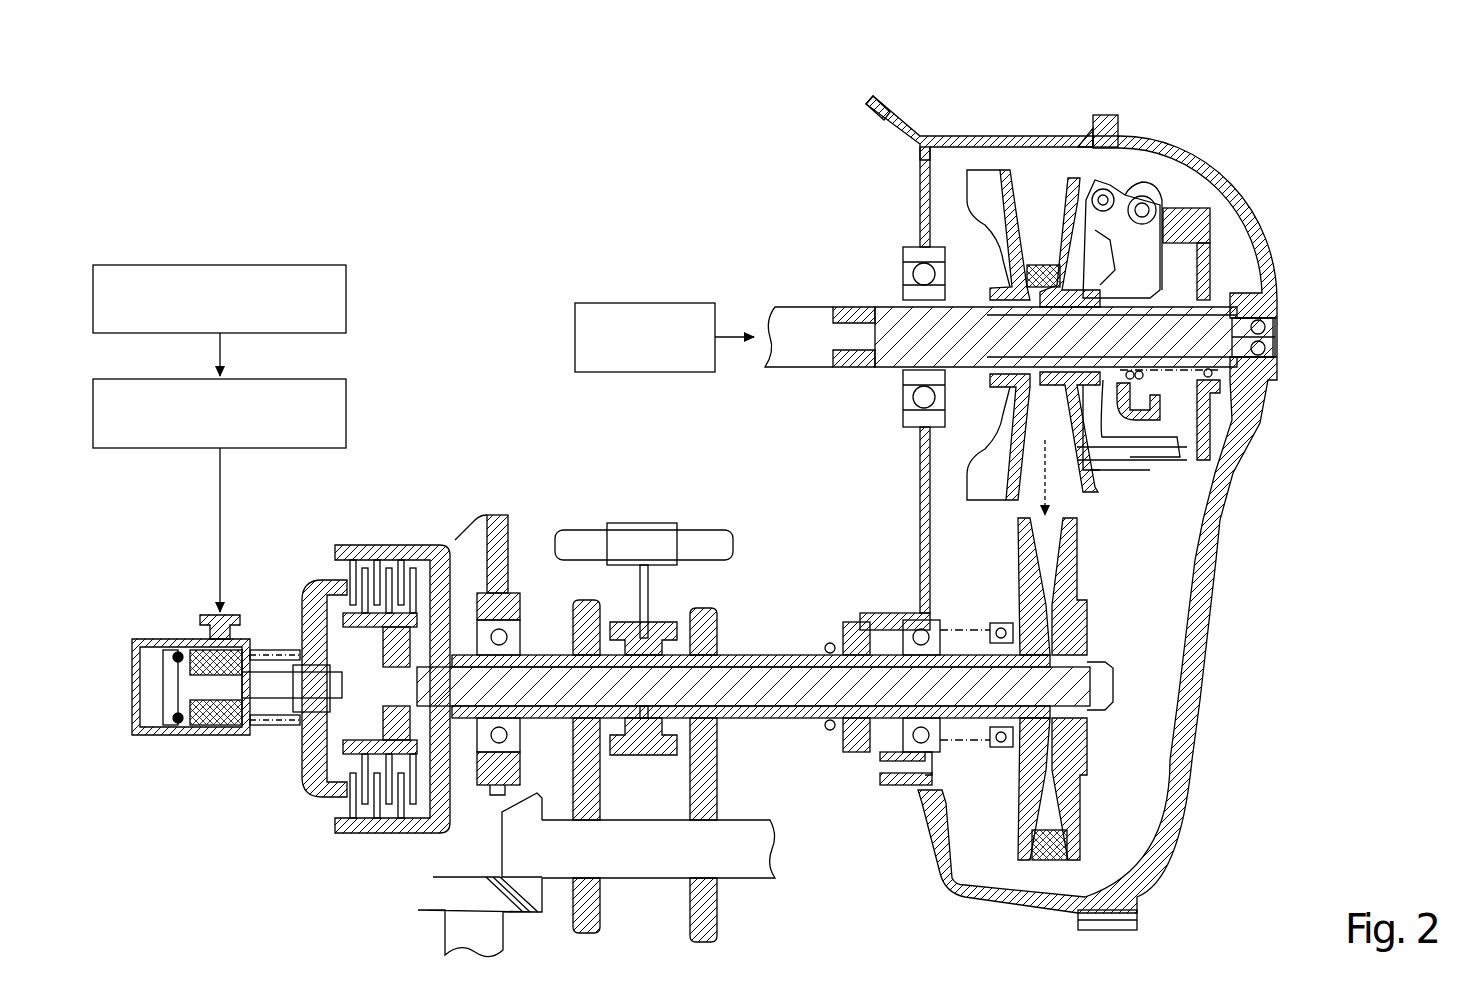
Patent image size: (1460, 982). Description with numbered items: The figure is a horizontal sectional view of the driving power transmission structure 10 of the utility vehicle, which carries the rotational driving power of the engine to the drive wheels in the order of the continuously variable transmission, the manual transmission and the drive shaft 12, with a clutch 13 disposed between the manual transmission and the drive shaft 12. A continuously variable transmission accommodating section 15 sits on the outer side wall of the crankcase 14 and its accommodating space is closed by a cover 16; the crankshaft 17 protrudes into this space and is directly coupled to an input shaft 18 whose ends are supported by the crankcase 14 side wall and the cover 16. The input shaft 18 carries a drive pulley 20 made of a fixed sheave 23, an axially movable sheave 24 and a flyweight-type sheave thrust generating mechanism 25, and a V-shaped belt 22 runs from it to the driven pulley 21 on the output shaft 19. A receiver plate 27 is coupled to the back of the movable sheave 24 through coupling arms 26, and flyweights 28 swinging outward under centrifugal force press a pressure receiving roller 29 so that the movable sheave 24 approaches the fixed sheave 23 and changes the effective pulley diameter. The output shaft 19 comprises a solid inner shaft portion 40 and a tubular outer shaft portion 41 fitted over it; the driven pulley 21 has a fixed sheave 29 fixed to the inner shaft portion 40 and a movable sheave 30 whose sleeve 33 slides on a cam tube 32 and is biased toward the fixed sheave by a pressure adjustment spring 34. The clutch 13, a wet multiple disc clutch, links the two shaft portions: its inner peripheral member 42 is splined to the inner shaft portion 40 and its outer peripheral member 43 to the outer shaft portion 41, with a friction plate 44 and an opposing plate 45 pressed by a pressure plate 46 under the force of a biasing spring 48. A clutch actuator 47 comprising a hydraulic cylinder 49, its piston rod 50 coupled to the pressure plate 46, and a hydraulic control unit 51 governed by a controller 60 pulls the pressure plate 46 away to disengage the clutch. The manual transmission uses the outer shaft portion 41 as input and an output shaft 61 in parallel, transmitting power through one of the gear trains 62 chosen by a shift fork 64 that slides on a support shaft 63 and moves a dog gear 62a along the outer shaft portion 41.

The driving power transmission structure 10 is at (550, 260).
The drive shaft 12 is at (444, 931).
The clutch 13 is at (359, 702).
The crankcase 14 is at (893, 112).
The CVT accommodating section 15 is at (960, 138).
The CVT cover 16 is at (1215, 628).
The crankshaft 17 is at (802, 318).
The input shaft 18 is at (1172, 335).
The output shaft 19 is at (765, 623).
The drive pulley 20 is at (1102, 115).
The driven pulley 21 is at (1060, 689).
The belt 22 is at (1072, 498).
The fixed sheave 23 is at (1012, 168).
The movable sheave 24 is at (1086, 190).
The sheave thrust generating mechanism 25 is at (1152, 188).
The coupling arms 26 is at (1187, 212).
The receiver plate 27 is at (1183, 445).
The flyweights 28 is at (1088, 256).
The pressure receiving roller / fixed sheave 29 is at (1148, 196).
The movable sheave 30 is at (1016, 600).
The cam tube 32 is at (940, 640).
The sleeve 33 is at (1010, 628).
The pressure adjustment spring 34 is at (972, 752).
The inner shaft portion 40 is at (800, 668).
The outer shaft portion 41 is at (768, 655).
The inner peripheral member 42 is at (378, 745).
The outer peripheral member 43 is at (452, 560).
The friction plate 44 is at (376, 585).
The opposing plate 45 is at (416, 580).
The pressure plate 46 is at (318, 580).
The clutch actuator 47 is at (160, 503).
The biasing spring 48 is at (274, 648).
The hydraulic cylinder 49 is at (163, 640).
The piston rod 50 is at (224, 738).
The hydraulic control unit 51 is at (178, 448).
The controller 60 is at (292, 265).
The output shaft 61 is at (652, 878).
The gear trains 62 is at (722, 746).
The dog gear 62a is at (648, 756).
The support shaft 63 is at (708, 525).
The shift fork 64 is at (652, 583).